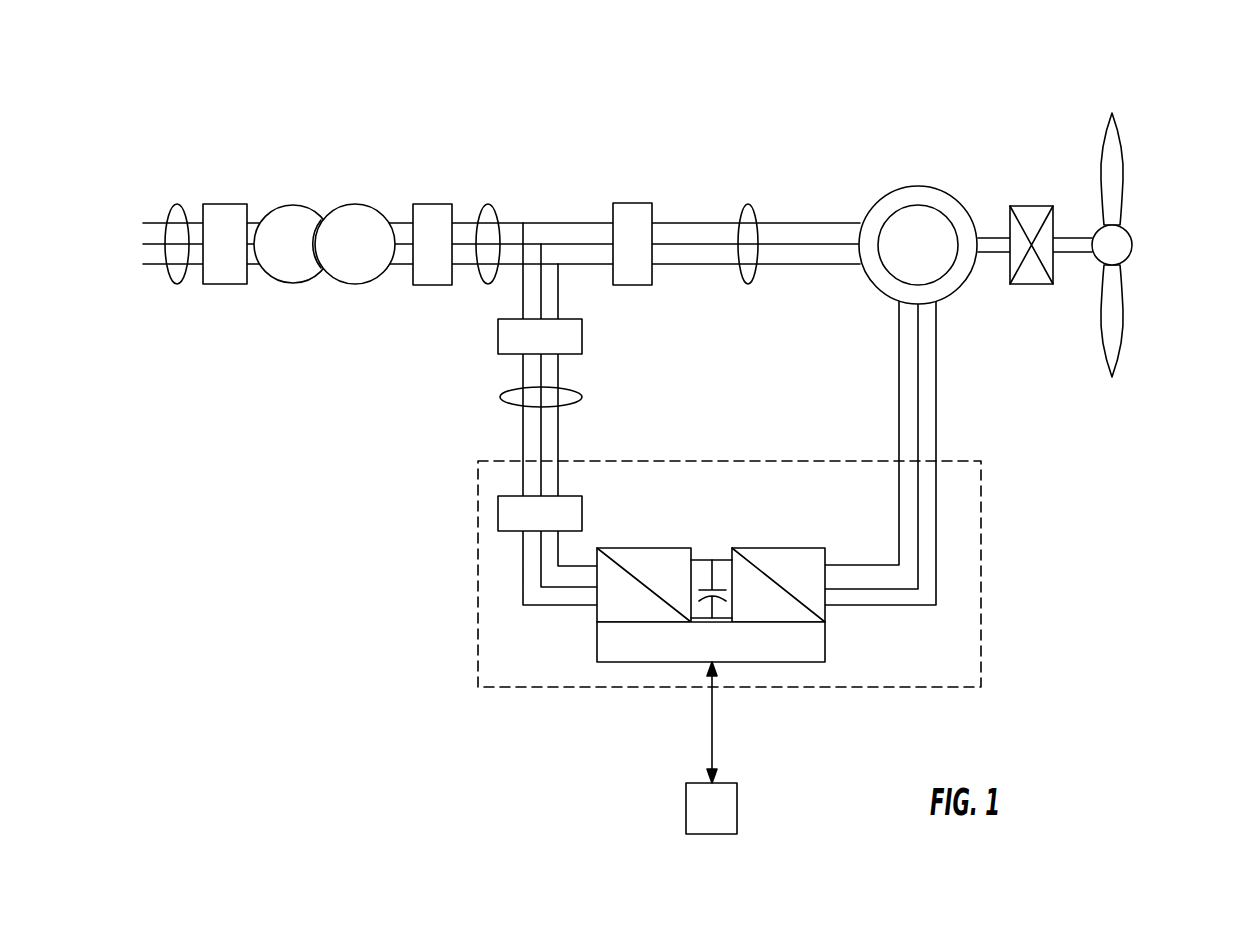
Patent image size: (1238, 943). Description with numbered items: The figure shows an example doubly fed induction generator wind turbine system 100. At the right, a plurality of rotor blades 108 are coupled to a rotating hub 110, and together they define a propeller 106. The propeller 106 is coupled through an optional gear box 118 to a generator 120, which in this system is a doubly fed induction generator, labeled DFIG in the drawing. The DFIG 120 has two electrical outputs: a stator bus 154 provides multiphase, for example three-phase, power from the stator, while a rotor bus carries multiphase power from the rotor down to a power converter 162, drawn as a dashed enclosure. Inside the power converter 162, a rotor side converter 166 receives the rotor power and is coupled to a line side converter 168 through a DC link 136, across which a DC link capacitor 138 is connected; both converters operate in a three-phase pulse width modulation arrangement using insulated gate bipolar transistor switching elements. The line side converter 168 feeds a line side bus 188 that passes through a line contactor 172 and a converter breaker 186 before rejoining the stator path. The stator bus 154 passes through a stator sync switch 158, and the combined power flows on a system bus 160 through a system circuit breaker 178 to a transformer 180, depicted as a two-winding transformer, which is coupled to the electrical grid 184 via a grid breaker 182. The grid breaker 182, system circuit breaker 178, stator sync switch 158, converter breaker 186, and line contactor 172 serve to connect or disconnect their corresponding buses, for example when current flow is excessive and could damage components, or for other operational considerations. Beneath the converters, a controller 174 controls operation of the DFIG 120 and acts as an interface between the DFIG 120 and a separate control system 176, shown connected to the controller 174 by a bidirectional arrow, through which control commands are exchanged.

The doubly fed induction generator (DFIG) wind turbine system 100 is at (357, 578).
The propeller 106 is at (1168, 103).
The rotor blades 108 is at (1122, 176).
The rotating hub 110 is at (1132, 238).
The gear box 118 is at (1022, 205).
The doubly fed induction generator (DFIG) 120 is at (910, 183).
The DC link 136 is at (720, 558).
The DC link capacitor 138 is at (703, 558).
The stator bus 154 is at (750, 204).
The stator sync switch 158 is at (628, 203).
The system bus 160 is at (488, 203).
The power converter 162 is at (981, 567).
The rotor side converter 166 is at (825, 615).
The line side converter 168 is at (598, 612).
The line contactor 172 is at (497, 517).
The controller 174 is at (643, 662).
The control system 176 is at (737, 818).
The system circuit breaker 178 is at (430, 203).
The transformer 180 is at (357, 205).
The grid breaker 182 is at (240, 204).
The electrical grid 184 is at (177, 204).
The converter breaker 186 is at (497, 340).
The line side bus 188 is at (500, 397).